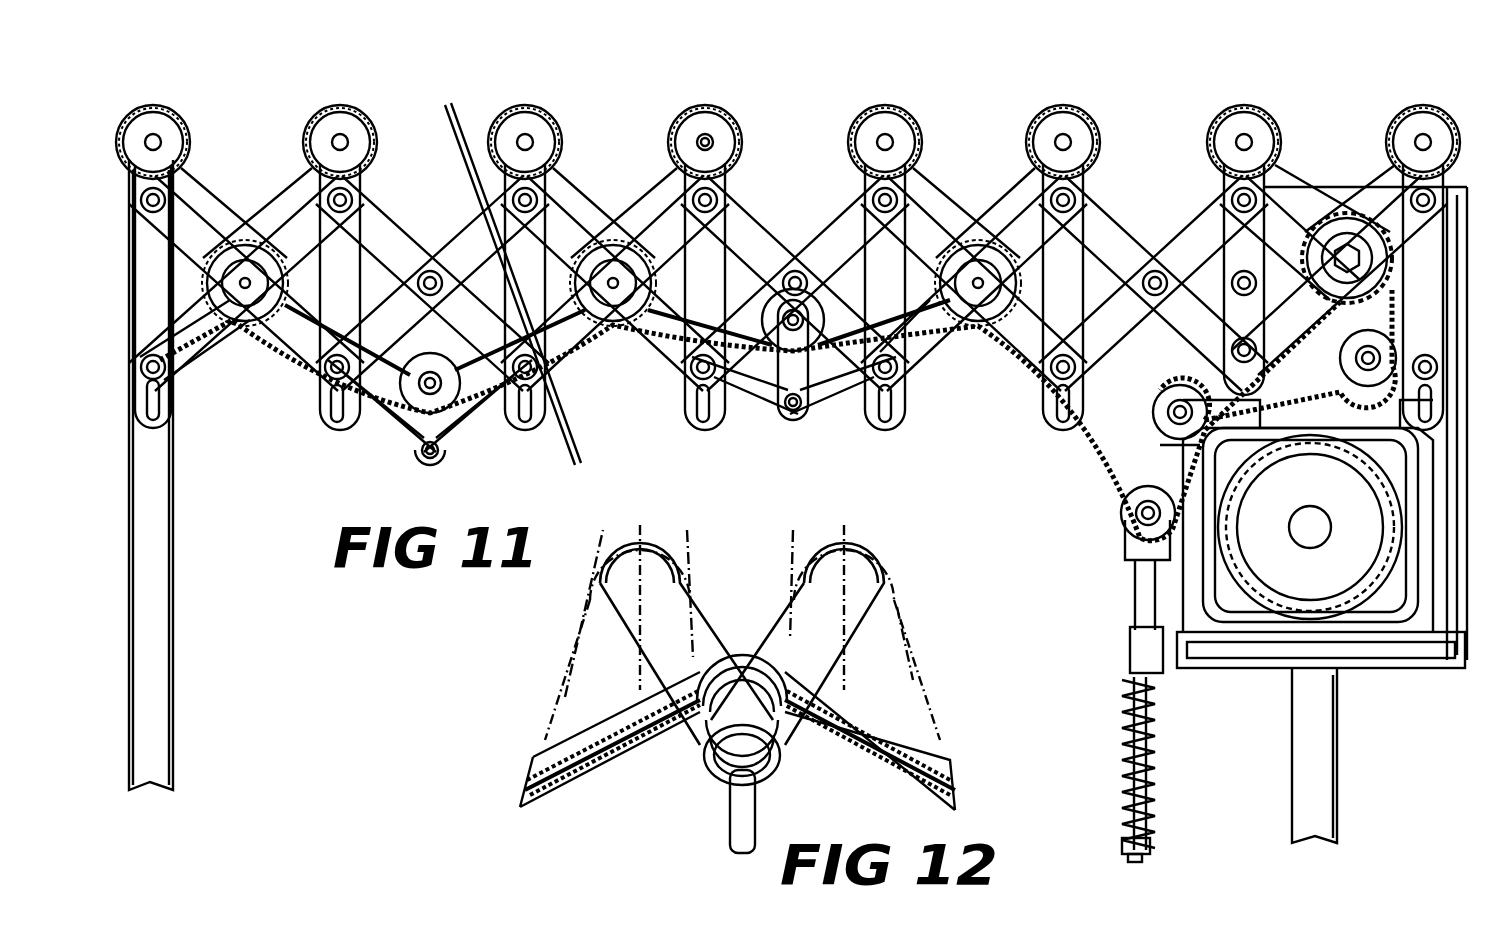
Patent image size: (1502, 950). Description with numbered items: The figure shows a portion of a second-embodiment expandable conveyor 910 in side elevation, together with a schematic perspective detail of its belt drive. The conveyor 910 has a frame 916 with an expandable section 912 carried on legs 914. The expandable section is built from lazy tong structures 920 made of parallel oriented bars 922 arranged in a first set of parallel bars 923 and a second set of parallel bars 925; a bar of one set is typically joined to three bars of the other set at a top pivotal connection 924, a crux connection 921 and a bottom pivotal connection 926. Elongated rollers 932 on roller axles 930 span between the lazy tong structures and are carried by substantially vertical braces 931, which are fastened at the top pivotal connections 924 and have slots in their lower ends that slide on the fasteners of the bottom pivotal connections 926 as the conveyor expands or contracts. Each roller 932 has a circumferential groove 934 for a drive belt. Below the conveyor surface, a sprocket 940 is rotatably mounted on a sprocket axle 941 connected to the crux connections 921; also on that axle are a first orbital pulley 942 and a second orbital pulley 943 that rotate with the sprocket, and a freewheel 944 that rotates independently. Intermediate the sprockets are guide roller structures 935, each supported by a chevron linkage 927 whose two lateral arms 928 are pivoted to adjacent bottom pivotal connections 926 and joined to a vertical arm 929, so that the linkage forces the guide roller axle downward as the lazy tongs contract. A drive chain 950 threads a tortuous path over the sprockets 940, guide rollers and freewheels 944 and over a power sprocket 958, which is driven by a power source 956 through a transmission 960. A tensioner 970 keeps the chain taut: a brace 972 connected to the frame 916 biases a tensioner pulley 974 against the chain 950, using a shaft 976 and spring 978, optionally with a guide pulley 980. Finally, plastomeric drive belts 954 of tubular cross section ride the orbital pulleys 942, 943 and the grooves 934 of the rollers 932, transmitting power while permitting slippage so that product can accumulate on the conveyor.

In FIG. 11, the conveyor 910 is at (1285, 98).
In FIG. 11, the expandable section 912 is at (845, 160).
In FIG. 11, the legs 914 is at (172, 615).
In FIG. 11, the frame 916 is at (1258, 668).
In FIG. 11, the lazy tong structures 920 is at (830, 215).
In FIG. 11, the crux connection 921 is at (1105, 240).
In FIG. 11, the parallel oriented bars 922 is at (1100, 225).
In FIG. 11, the first set of parallel bars 923 is at (915, 175).
In FIG. 11, the top pivotal connection 924 is at (720, 245).
In FIG. 11, the second set of parallel bars 925 is at (920, 210).
In FIG. 11, the bottom pivotal connection 926 is at (890, 380).
In FIG. 11, the chevron linkage 927 is at (870, 408).
In FIG. 11, the lateral arms 928 is at (830, 400).
In FIG. 11, the vertical arm 929 is at (790, 410).
In FIG. 11, the roller axles 930 is at (715, 140).
In FIG. 11, the braces 931 is at (330, 395).
In FIG. 11, the elongated rollers 932 is at (165, 108).
In FIG. 12, the elongated rollers 932 is at (660, 540).
In FIG. 12, the circumferential groove 934 is at (642, 530).
In FIG. 11, the guide roller structures 935 is at (760, 405).
In FIG. 11, the sprocket 940 is at (1010, 330).
In FIG. 12, the sprocket 940 is at (825, 705).
In FIG. 12, the sprocket axle 941 is at (722, 818).
In FIG. 12, the first orbital pulley 942 is at (790, 690).
In FIG. 12, the second orbital pulley 943 is at (770, 800).
In FIG. 12, the freewheel 944 is at (742, 670).
In FIG. 11, the drive chain 950 is at (665, 330).
In FIG. 12, the drive chain 950 is at (640, 700).
In FIG. 11, the drive belts 954 is at (280, 160).
In FIG. 12, the drive belts 954 is at (590, 620).
In FIG. 11, the power source 956 is at (1333, 585).
In FIG. 11, the power sprocket 958 is at (1348, 348).
In FIG. 11, the transmission 960 is at (1340, 600).
In FIG. 11, the tensioner 970 is at (1125, 745).
In FIG. 11, the brace 972 is at (1135, 605).
In FIG. 11, the tensioner pulley 974 is at (1125, 515).
In FIG. 11, the shaft 976 is at (1135, 690).
In FIG. 11, the spring 978 is at (1120, 800).
In FIG. 11, the guide pulley 980 is at (1160, 415).